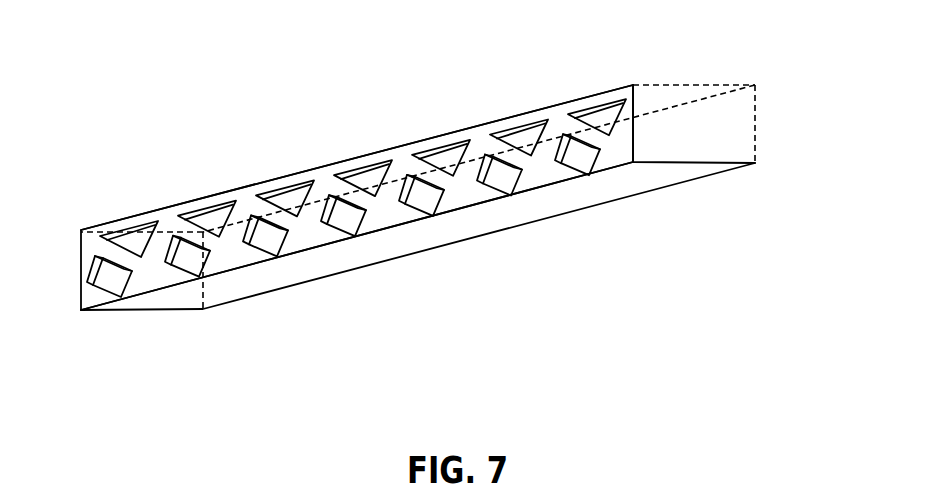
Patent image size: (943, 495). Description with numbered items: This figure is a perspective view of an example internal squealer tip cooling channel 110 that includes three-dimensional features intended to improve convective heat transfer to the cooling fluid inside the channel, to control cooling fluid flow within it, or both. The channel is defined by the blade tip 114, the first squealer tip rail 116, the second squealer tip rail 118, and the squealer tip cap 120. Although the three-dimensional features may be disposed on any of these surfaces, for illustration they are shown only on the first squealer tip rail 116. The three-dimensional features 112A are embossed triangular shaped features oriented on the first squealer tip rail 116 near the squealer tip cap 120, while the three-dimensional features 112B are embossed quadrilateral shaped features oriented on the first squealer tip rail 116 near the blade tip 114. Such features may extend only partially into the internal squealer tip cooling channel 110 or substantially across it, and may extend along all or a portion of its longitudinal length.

The internal squealer tip cooling channel 110 is at (435, 209).
The three-dimensional features 112A is at (281, 173).
The three-dimensional features 112B is at (401, 168).
The blade tip 114 is at (152, 320).
The first squealer tip rail 116 is at (600, 81).
The second squealer tip rail 118 is at (768, 115).
The squealer tip cap 120 is at (702, 74).